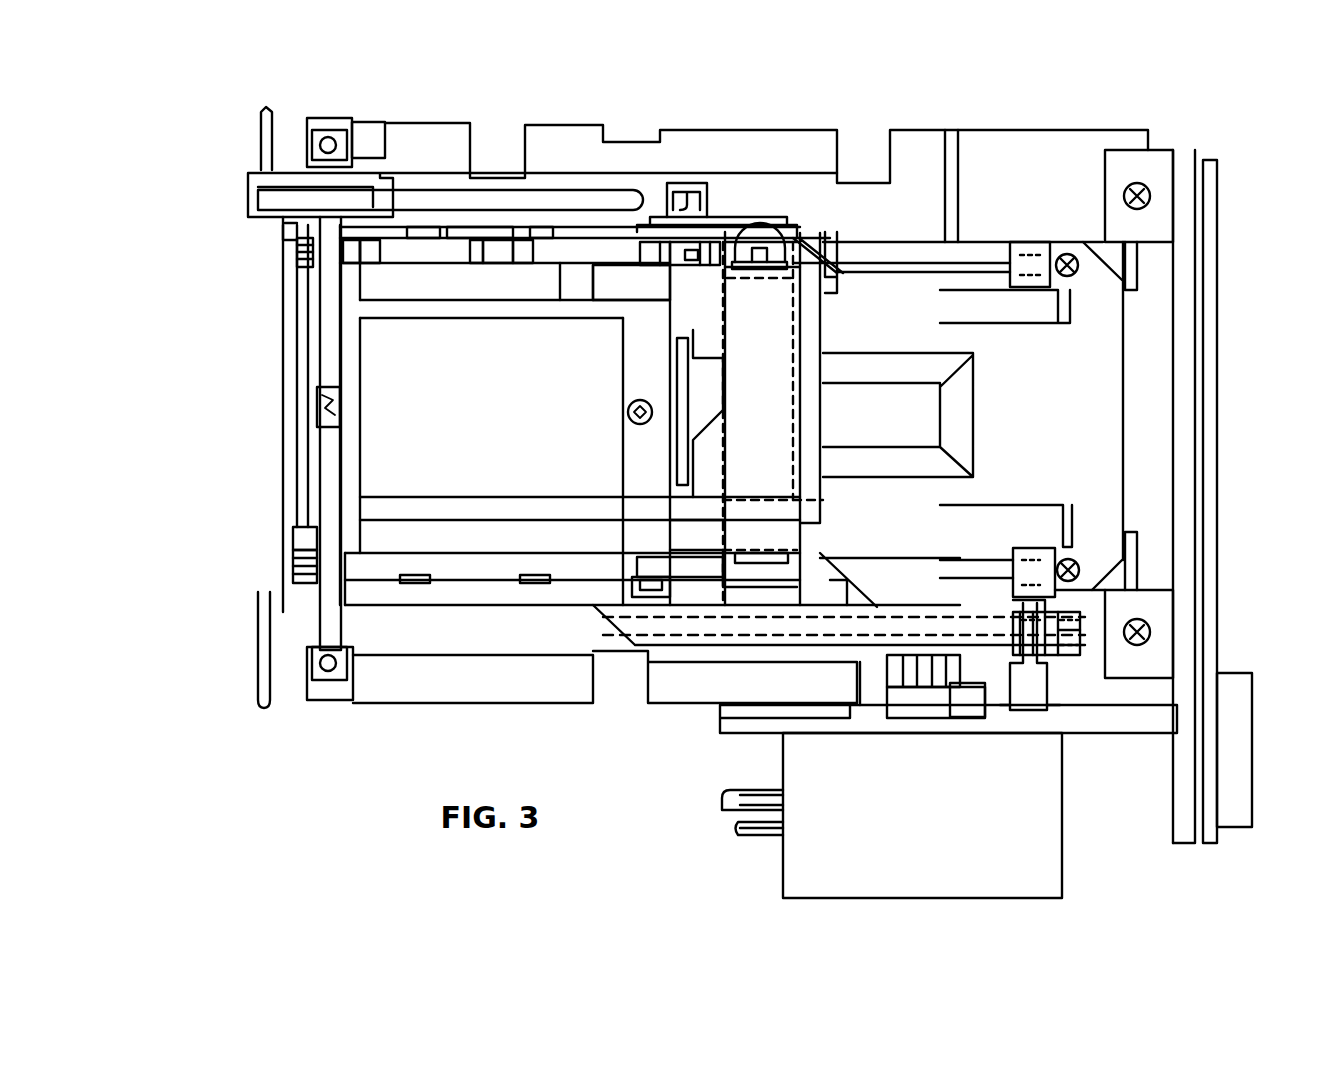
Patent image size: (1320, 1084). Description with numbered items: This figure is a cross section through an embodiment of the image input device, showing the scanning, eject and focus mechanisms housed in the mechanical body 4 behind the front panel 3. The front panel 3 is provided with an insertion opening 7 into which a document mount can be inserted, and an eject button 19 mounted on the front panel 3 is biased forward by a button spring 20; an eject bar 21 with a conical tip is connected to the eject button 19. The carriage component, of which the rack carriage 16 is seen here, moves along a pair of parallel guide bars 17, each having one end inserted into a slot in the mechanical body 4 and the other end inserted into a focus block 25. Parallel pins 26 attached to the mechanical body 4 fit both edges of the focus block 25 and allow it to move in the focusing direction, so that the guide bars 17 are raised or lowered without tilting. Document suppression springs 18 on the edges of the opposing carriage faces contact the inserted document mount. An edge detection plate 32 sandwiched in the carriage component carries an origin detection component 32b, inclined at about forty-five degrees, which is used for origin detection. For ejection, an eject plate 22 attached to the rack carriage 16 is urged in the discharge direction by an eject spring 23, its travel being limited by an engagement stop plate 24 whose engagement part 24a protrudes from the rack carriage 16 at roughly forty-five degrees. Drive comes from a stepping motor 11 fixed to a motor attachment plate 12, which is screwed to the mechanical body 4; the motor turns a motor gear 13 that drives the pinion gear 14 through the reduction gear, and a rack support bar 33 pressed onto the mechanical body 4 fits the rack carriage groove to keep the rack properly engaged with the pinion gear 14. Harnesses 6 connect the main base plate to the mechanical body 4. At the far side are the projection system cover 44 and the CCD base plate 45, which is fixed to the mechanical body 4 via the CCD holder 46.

The front panel 3 is at (262, 685).
The mechanical body 4 is at (508, 652).
The harnesses 6 is at (748, 836).
The insertion opening 7 is at (283, 508).
The stepping motor 11 is at (1040, 883).
The motor attachment plate 12 is at (745, 722).
The motor gear 13 is at (950, 705).
The pinion gear 14 is at (997, 675).
The rack carriage 16 is at (353, 310).
The guide bars 17 is at (912, 255).
The document suppression springs 18 is at (380, 250).
The eject button 19 is at (248, 183).
The button spring 20 is at (283, 225).
The eject bar 21 is at (490, 198).
The eject plate 22 is at (685, 545).
The eject spring 23 is at (742, 222).
The engagement stop plate 24 is at (697, 200).
The engagement part 24a is at (688, 195).
The focus block 25 is at (323, 628).
The parallel pins 26 is at (329, 137).
The edge detection plate 32 is at (735, 580).
The origin detection component 32b is at (732, 410).
The rack support bar 33 is at (1070, 635).
The projection system cover 44 is at (1148, 372).
The CCD base plate 45 is at (1215, 298).
The CCD holder 46 is at (1185, 467).